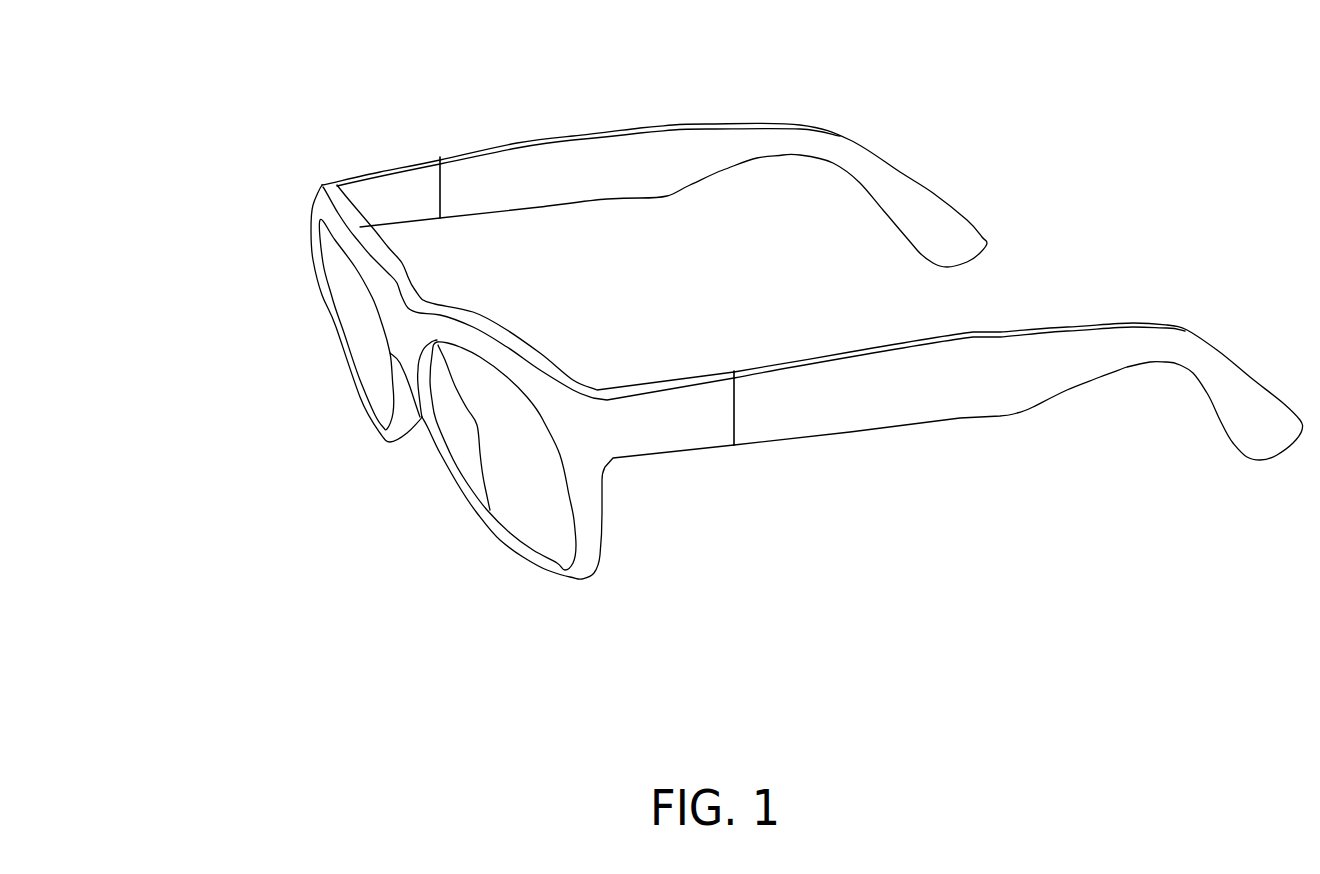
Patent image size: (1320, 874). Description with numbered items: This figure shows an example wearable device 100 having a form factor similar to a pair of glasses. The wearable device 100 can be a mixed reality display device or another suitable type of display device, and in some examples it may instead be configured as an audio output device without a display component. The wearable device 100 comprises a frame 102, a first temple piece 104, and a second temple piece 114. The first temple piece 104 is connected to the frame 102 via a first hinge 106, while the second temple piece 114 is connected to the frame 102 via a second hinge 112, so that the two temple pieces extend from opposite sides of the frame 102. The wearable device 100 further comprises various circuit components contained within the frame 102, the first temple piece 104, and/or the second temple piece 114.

The wearable device 100 is at (103, 136).
The frame 102 is at (465, 307).
The first temple piece 104 is at (797, 357).
The first hinge 106 is at (733, 398).
The second hinge 112 is at (438, 158).
The second temple piece 114 is at (517, 143).